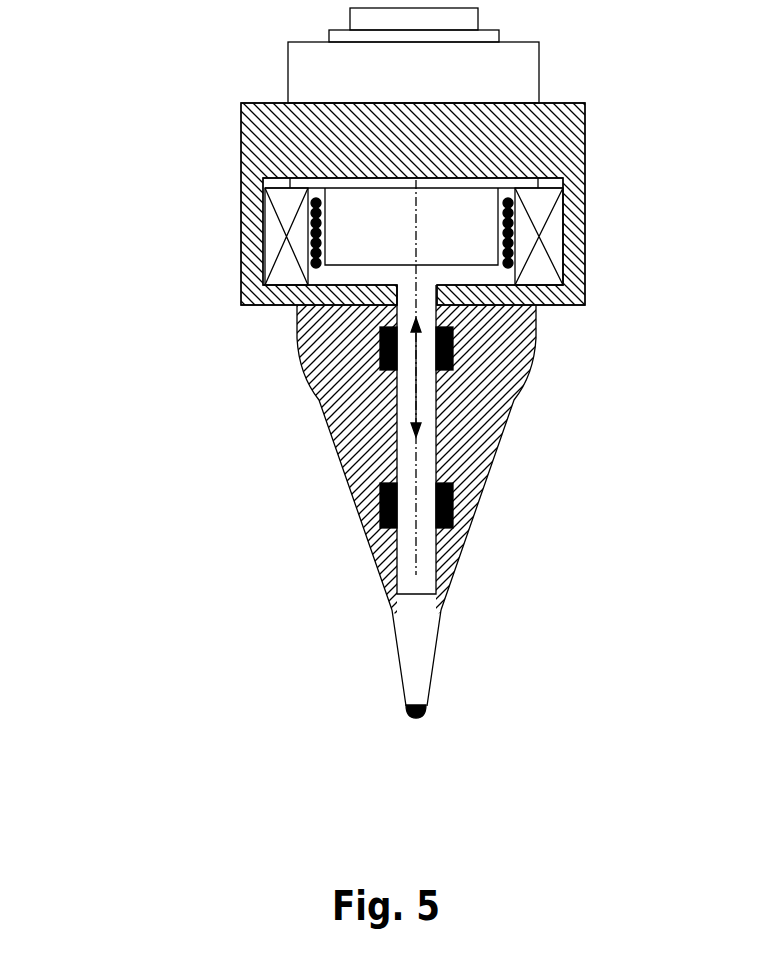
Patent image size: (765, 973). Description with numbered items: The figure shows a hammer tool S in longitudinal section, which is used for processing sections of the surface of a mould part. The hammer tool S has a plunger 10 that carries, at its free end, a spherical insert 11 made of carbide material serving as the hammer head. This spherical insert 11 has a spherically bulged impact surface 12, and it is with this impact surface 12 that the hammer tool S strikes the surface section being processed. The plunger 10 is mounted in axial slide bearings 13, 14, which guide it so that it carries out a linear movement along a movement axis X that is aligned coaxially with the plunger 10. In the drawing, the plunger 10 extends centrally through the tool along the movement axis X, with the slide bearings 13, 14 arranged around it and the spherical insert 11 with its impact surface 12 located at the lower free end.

The hammer tool S is at (226, 122).
The movement axis X is at (415, 465).
The plunger 10 is at (418, 605).
The spherical insert 11 is at (425, 713).
The spherically bulged impact surface 12 is at (414, 720).
The axial slide bearing 13 is at (450, 528).
The axial slide bearing 14 is at (453, 373).